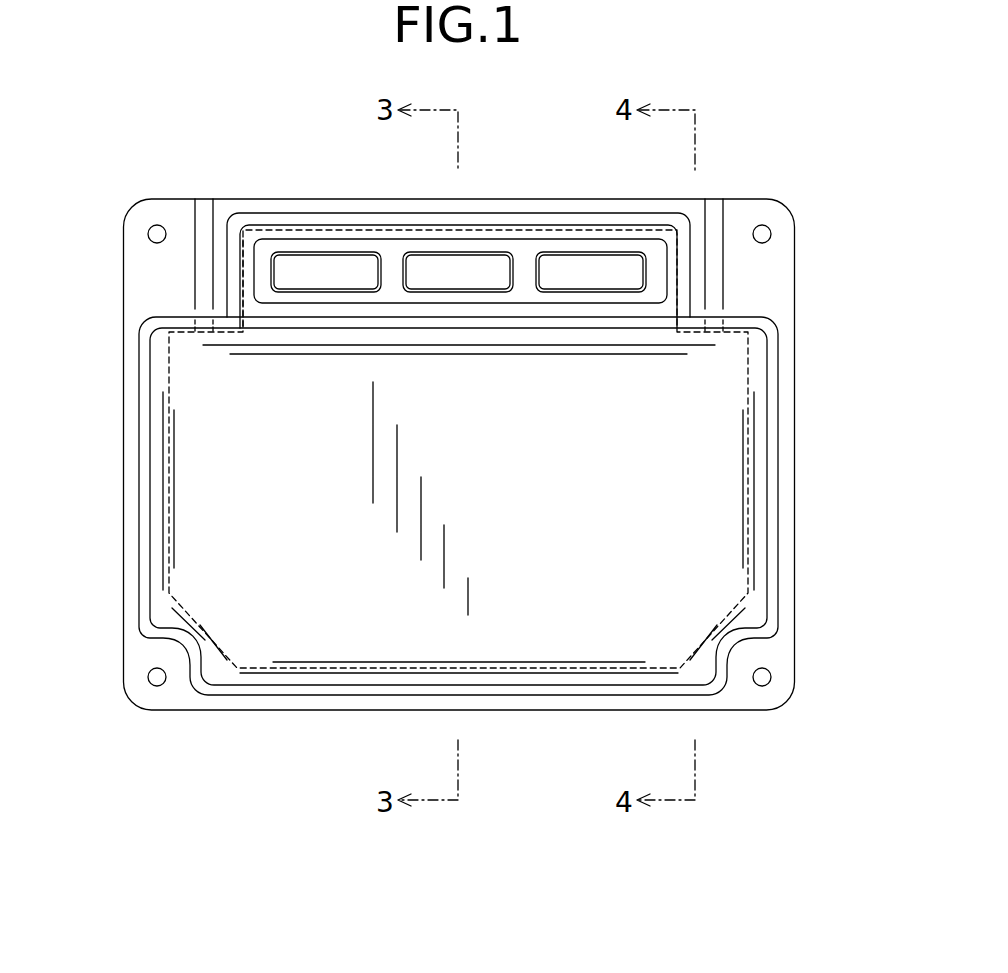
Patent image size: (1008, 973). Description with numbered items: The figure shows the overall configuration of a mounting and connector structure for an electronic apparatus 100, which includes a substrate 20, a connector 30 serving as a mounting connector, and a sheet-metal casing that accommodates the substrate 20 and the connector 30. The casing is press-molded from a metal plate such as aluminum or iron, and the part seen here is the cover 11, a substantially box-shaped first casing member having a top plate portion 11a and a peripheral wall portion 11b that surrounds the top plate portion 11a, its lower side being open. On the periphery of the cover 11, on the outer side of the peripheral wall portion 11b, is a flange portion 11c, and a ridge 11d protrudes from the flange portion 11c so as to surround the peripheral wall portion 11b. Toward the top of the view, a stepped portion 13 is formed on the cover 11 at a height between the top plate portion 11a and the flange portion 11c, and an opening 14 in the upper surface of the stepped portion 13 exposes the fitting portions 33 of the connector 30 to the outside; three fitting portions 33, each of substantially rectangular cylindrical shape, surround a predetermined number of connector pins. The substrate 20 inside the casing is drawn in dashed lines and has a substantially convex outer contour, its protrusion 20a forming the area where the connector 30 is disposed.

The electronic apparatus 100 is at (114, 152).
The cover 11 is at (788, 288).
The top plate portion 11a is at (310, 640).
The peripheral wall portion 11b is at (377, 678).
The flange portion 11c is at (795, 357).
The ridge 11d is at (777, 405).
The stepped portion 13 is at (622, 236).
The opening 14 is at (314, 243).
The substrate 20 is at (758, 523).
The protrusion 20a is at (240, 277).
The connector 30 is at (523, 252).
The fitting portions 33 is at (420, 254).